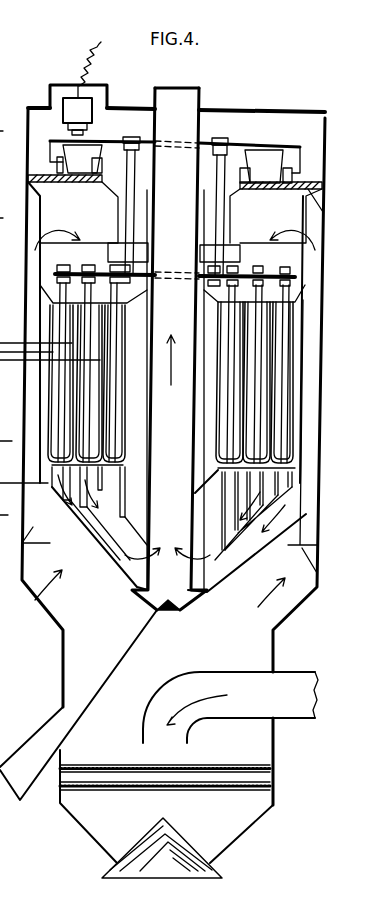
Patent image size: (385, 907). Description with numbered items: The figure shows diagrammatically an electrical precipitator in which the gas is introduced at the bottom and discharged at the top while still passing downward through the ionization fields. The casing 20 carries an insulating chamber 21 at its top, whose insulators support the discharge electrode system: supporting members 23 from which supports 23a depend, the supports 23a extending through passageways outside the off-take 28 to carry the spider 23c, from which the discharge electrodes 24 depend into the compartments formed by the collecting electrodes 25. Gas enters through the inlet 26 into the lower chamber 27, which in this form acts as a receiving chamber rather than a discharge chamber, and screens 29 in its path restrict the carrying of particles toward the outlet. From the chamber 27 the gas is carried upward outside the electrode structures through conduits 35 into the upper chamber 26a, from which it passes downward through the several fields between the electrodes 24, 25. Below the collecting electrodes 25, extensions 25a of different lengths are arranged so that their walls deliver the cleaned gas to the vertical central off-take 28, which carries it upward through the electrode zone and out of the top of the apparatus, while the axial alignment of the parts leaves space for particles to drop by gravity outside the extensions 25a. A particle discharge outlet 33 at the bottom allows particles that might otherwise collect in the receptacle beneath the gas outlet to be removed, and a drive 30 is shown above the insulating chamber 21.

The casing 20 is at (322, 377).
The insulating chamber 21 is at (308, 132).
The supporting members 23 is at (308, 153).
The supports 23a is at (128, 208).
The spider 23c is at (292, 278).
The discharge electrodes 24 is at (257, 404).
The collecting electrodes 25 is at (300, 421).
The extensions 25a is at (290, 485).
The inlet 26 is at (230, 707).
The chamber 26a is at (175, 232).
The receiving chamber 27 is at (160, 724).
The off-take 28 is at (167, 349).
The screens 29 is at (262, 785).
The motor 30 is at (96, 45).
The particle discharge outlet 33 is at (40, 735).
The conduits 35 is at (310, 448).